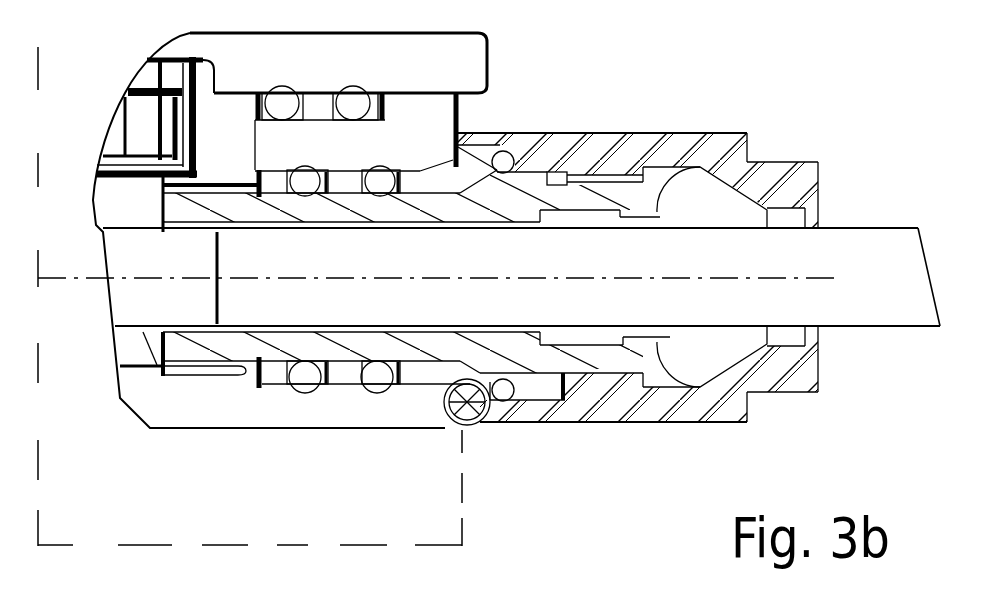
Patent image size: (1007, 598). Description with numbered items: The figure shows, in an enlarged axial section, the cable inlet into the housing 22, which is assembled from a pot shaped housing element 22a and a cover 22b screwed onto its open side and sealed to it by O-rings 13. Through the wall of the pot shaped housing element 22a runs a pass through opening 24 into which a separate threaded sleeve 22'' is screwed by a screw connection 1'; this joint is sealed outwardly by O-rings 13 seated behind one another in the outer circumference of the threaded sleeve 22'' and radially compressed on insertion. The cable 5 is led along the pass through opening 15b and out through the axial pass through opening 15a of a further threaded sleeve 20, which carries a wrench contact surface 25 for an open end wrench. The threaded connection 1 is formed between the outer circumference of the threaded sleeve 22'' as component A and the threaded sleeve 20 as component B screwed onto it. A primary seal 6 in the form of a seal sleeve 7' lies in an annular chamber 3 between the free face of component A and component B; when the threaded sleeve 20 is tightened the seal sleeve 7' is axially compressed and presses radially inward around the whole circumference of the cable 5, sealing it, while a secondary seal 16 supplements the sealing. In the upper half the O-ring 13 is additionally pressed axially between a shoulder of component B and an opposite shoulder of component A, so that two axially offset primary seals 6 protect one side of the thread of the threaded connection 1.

The threaded connection 1 is at (623, 125).
The screw connection 1' is at (210, 153).
The chamber 3 is at (513, 153).
The cable 5 is at (873, 228).
The primary seal 6 is at (462, 138).
The seal sleeve 7' is at (712, 277).
The O-ring 13 is at (373, 379).
The pass through opening 15a is at (795, 332).
The pass through opening 15b is at (521, 277).
The secondary seal 16 is at (500, 155).
The threaded sleeve 20 is at (650, 150).
The housing 22 is at (396, 271).
The pot shaped housing element 22a is at (355, 145).
The cover 22b is at (338, 76).
The threaded sleeve 22'' is at (554, 271).
The pass through opening 24 is at (197, 372).
The wrench contact surface 25 is at (782, 276).
The component A is at (469, 184).
The component B is at (607, 407).